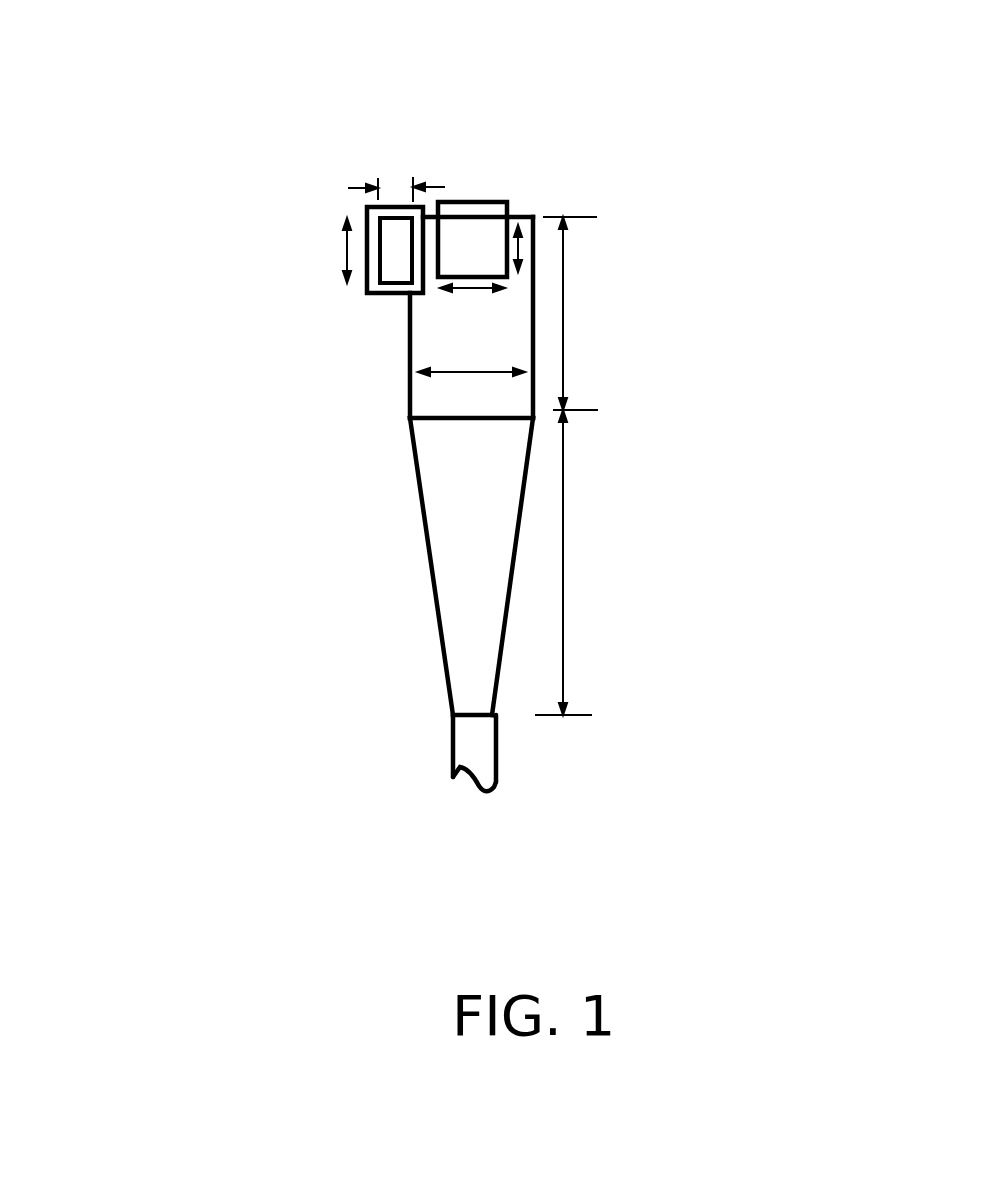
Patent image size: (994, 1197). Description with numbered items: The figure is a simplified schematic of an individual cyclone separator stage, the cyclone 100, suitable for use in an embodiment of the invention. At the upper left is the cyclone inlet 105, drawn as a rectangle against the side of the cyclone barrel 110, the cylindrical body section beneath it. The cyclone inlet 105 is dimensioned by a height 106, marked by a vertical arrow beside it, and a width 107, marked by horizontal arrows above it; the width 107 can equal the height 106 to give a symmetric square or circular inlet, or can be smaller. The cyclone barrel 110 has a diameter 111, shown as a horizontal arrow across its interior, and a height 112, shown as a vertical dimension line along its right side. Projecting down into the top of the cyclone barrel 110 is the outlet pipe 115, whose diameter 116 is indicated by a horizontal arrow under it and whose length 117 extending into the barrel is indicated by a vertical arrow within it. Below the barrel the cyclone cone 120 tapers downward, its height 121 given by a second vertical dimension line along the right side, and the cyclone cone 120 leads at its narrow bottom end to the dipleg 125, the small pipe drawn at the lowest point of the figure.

The cyclone 100 is at (325, 532).
The cyclone inlet 105 is at (363, 213).
The height of cyclone inlet 106 is at (325, 252).
The width of cyclone inlet 107 is at (418, 157).
The cyclone barrel 110 is at (395, 345).
The diameter of cyclone barrel 111 is at (493, 390).
The height of cyclone barrel 112 is at (588, 273).
The outlet pipe 115 is at (517, 203).
The diameter of outlet pipe 116 is at (492, 295).
The length that outlet pipe extends into barrel 117 is at (522, 252).
The cyclone cone 120 is at (517, 600).
The height of cyclone cone 121 is at (588, 530).
The dipleg 125 is at (517, 763).